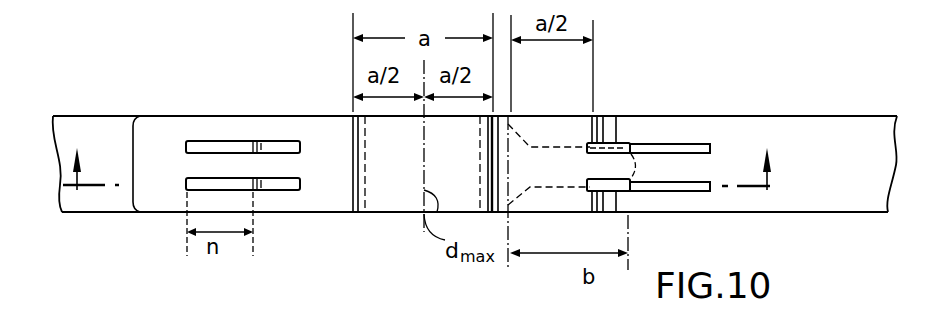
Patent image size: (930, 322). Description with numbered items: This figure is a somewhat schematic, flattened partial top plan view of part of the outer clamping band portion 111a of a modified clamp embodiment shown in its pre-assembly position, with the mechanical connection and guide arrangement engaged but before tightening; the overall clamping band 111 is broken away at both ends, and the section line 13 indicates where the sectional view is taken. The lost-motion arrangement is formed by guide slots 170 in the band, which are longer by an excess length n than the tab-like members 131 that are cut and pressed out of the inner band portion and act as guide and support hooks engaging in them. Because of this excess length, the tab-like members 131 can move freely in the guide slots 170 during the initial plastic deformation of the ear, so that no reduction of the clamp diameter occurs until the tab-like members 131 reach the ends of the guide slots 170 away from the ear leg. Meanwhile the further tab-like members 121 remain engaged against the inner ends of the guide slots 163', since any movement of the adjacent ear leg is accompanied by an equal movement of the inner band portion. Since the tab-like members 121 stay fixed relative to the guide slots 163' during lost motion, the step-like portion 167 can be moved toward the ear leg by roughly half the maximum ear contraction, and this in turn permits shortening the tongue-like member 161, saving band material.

The clamping band 111 is at (848, 130).
The outer clamping band portion 111a is at (150, 126).
The guide slots 170 is at (228, 183).
The tab-like members 131 is at (282, 146).
The tongue-like member 161 is at (523, 116).
The tab-like members 121 is at (596, 143).
The step-like portion 167 is at (607, 125).
The guide slots 163' is at (683, 133).
The section line 13 is at (426, 174).